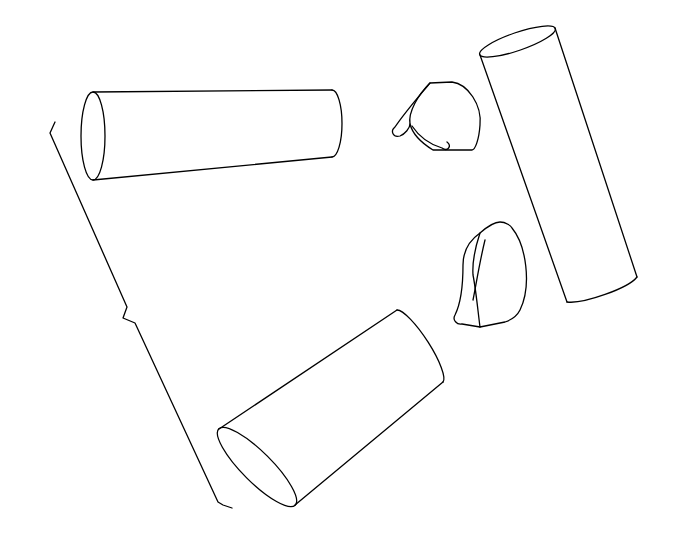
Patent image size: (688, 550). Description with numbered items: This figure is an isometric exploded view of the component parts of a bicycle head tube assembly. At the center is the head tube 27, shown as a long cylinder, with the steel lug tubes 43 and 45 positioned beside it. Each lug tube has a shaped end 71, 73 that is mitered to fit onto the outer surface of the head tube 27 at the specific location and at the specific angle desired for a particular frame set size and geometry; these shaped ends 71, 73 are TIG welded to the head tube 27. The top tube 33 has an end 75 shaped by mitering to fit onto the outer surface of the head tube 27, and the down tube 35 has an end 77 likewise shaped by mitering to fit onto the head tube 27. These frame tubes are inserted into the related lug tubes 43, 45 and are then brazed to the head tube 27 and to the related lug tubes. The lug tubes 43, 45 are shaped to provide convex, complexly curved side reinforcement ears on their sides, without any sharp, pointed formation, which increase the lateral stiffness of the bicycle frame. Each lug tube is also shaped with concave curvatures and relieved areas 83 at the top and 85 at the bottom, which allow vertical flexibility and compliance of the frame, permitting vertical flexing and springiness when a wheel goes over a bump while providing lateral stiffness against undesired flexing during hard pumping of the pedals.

The head tube 27 is at (578, 95).
The top tube 33 is at (218, 115).
The down tube 35 is at (326, 398).
The steel lug tube 43 is at (417, 122).
The steel lug tube 45 is at (464, 354).
The shaped end 71 is at (466, 88).
The shaped end 73 is at (516, 226).
The end 75 is at (341, 105).
The end 77 is at (400, 308).
The relieved area 83 is at (483, 265).
The relieved area 85 is at (441, 159).